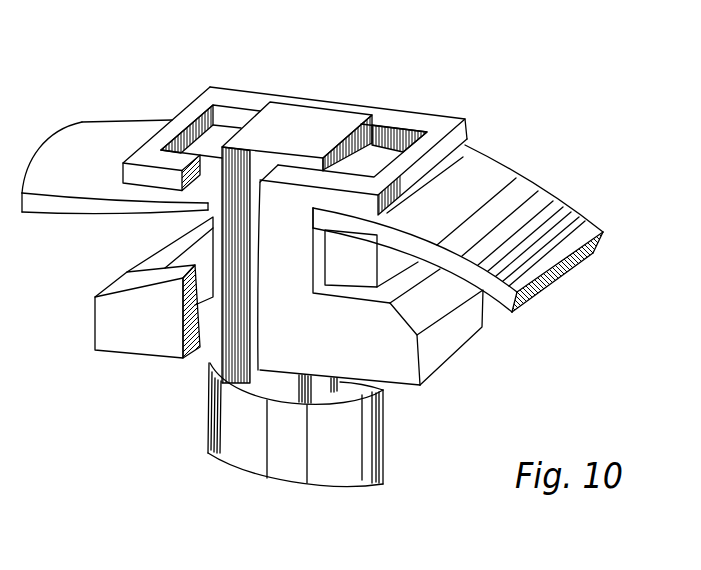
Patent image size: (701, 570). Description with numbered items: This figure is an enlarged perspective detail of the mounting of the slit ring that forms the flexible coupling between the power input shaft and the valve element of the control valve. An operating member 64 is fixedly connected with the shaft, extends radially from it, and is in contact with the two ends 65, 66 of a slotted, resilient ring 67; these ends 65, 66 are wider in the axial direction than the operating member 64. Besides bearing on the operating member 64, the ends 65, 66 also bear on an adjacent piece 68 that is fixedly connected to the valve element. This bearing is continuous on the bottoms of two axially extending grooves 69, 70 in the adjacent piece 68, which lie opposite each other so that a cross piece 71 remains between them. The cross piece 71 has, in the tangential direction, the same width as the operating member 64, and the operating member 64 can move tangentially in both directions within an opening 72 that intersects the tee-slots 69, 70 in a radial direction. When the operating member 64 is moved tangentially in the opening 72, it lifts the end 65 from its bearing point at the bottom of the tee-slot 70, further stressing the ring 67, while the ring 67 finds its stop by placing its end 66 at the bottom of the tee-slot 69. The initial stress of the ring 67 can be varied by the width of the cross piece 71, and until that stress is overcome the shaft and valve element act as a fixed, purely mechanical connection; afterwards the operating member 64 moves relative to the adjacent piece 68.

The operating member 64 is at (325, 122).
The end of the resilient ring 65 is at (178, 203).
The end of the resilient ring 66 is at (230, 397).
The slotted resilient ring 67 is at (535, 233).
The adjacent piece 68 is at (388, 360).
The groove 69 is at (358, 295).
The groove 70 is at (175, 270).
The cross piece 71 is at (273, 267).
The opening 72 is at (390, 155).